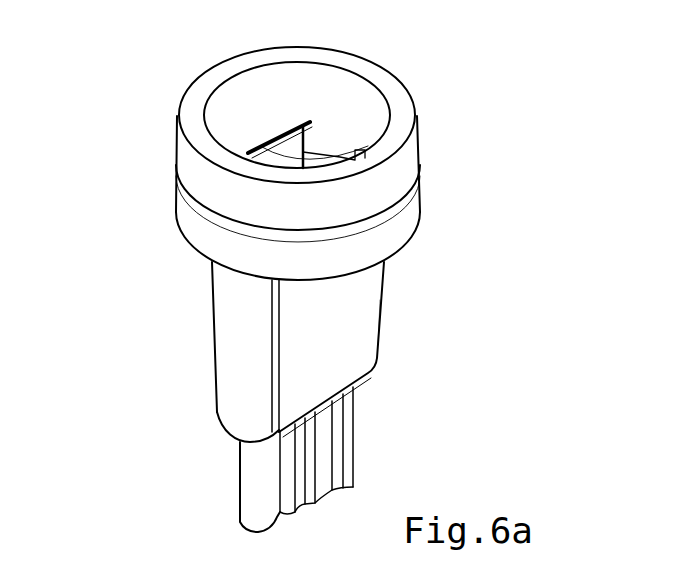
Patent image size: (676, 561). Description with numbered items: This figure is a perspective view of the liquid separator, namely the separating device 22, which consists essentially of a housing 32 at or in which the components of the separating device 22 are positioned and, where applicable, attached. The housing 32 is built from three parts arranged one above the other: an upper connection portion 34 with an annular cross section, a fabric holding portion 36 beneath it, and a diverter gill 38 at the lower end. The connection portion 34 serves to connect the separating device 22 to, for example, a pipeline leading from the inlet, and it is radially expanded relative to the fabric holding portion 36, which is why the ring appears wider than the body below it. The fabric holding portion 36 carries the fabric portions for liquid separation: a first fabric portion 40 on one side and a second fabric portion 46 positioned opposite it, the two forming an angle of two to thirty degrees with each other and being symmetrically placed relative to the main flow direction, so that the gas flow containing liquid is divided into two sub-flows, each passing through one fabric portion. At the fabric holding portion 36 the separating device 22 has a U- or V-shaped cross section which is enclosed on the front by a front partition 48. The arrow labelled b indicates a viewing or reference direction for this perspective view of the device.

The separating device 22 is at (125, 142).
The housing 32 is at (508, 73).
The connection portion 34 is at (392, 173).
The fabric holding portion 36 is at (408, 302).
The first fabric portion 40 is at (213, 350).
The second fabric portion 46 is at (348, 343).
The front partition 48 is at (240, 407).
The diverter gill 38 is at (325, 465).
The direction b is at (420, 363).